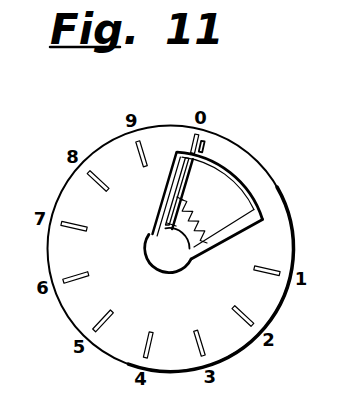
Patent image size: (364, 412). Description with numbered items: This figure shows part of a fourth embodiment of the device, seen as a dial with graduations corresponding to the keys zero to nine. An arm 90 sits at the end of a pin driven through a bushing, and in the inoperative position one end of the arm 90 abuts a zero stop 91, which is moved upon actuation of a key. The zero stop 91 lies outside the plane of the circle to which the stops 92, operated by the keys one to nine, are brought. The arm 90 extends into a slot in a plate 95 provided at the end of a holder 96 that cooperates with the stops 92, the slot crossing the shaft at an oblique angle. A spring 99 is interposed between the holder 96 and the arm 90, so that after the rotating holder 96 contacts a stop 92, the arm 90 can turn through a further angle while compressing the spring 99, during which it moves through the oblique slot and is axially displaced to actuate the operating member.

The arm 90 is at (184, 196).
The zero stop 91 is at (204, 145).
The stops 92 is at (64, 221).
The plate 95 is at (228, 177).
The holder 96 is at (177, 152).
The spring 99 is at (194, 247).